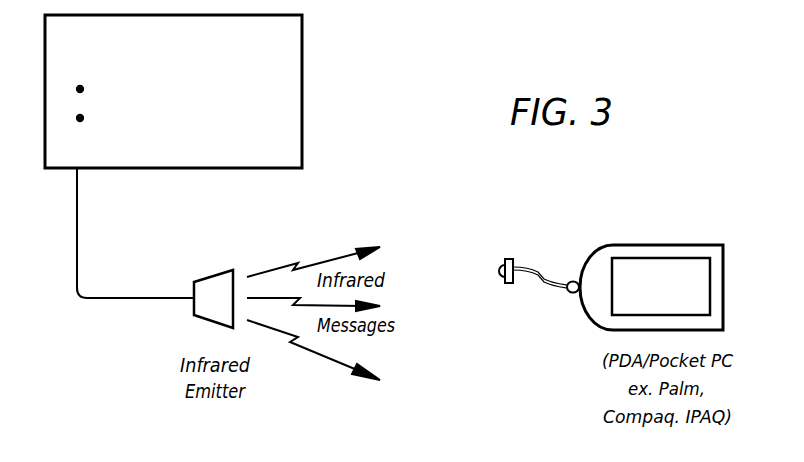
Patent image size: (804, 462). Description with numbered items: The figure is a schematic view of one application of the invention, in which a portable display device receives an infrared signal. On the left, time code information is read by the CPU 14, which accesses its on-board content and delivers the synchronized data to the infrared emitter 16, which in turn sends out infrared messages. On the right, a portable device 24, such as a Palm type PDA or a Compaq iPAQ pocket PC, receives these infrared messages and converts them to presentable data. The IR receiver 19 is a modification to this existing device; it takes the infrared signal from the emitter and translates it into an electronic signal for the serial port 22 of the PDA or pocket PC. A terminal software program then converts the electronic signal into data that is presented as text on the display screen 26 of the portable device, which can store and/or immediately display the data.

The CPU 14 is at (302, 91).
The infrared emitter 16 is at (213, 276).
The IR receiver 19 is at (507, 283).
The serial port 22 is at (578, 276).
The portable device 24 is at (652, 245).
The display screen 26 is at (690, 258).